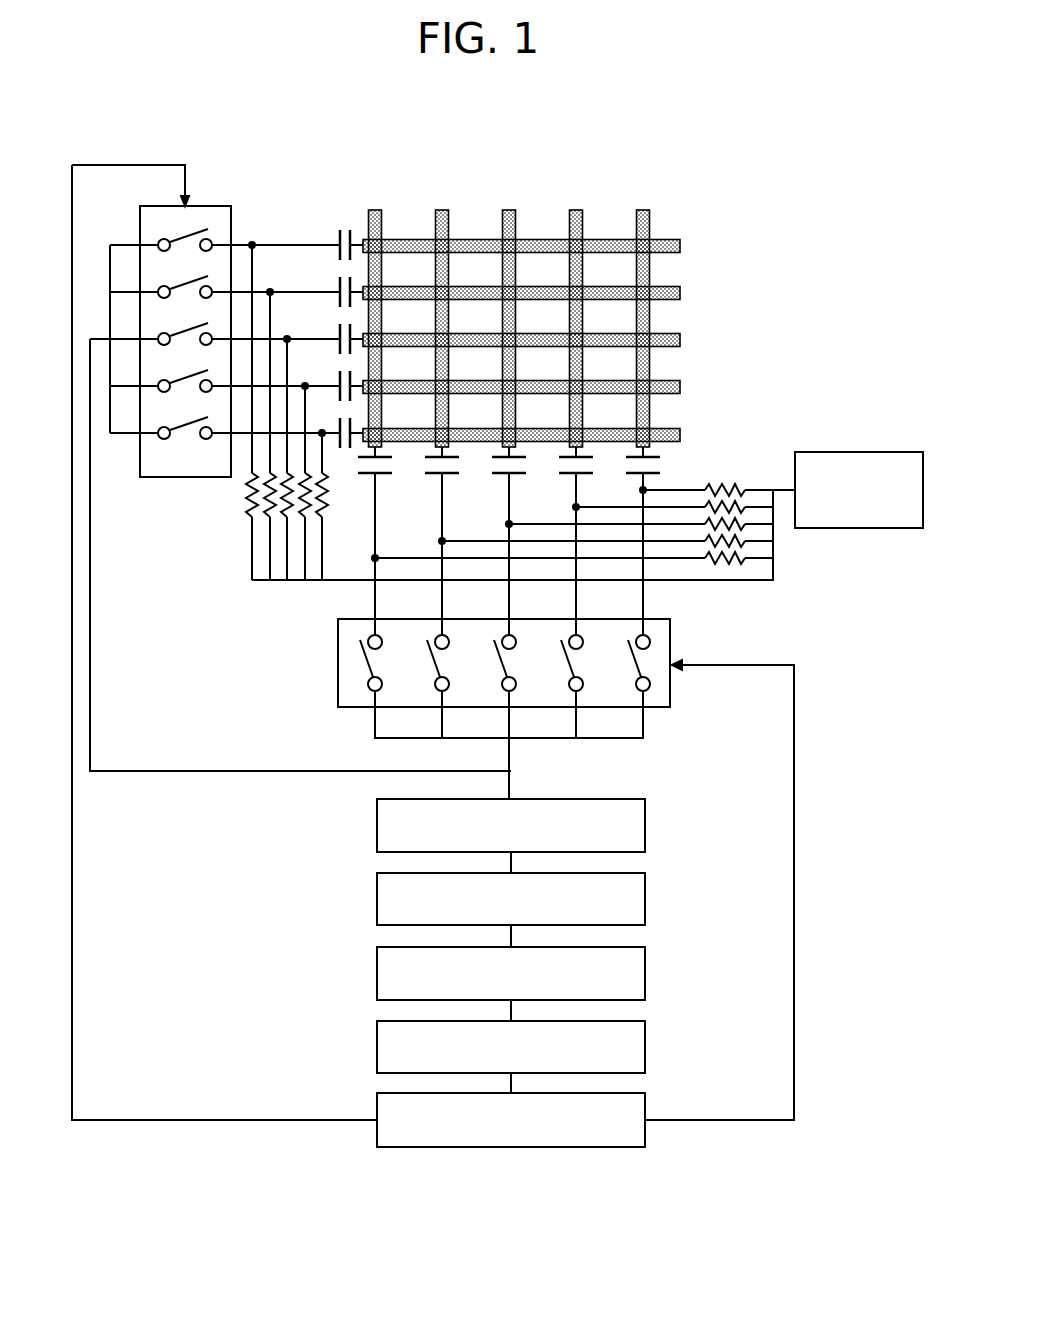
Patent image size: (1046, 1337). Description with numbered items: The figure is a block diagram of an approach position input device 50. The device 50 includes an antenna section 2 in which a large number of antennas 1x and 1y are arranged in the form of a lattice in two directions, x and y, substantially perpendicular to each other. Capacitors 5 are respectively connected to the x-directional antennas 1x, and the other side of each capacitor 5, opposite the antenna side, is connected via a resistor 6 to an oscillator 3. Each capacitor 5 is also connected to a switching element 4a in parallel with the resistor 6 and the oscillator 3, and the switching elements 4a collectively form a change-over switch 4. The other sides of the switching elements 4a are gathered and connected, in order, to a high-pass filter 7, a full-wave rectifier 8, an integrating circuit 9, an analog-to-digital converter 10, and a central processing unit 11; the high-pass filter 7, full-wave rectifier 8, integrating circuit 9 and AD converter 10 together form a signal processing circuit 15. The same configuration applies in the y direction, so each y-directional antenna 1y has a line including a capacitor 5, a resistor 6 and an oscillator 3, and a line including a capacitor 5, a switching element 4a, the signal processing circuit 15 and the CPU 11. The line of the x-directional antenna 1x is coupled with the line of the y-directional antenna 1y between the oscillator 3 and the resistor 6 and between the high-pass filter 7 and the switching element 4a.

The approach position input device 50 is at (548, 210).
The antenna section 2 is at (658, 232).
The x-directional antenna 1x is at (680, 293).
The y-directional antenna 1y is at (507, 210).
The capacitor 5 is at (340, 225).
The change-over switch 4 is at (205, 212).
The switching element 4a is at (190, 432).
The resistor 6 is at (245, 500).
The oscillator 3 is at (893, 452).
The high-pass filter 7 is at (645, 808).
The full-wave rectifier 8 is at (645, 881).
The integrating circuit 9 is at (645, 955).
The analog-to-digital (AD) converter 10 is at (645, 1028).
The central processing unit (CPU) 11 is at (645, 1100).
The signal processing circuit 15 is at (707, 788).